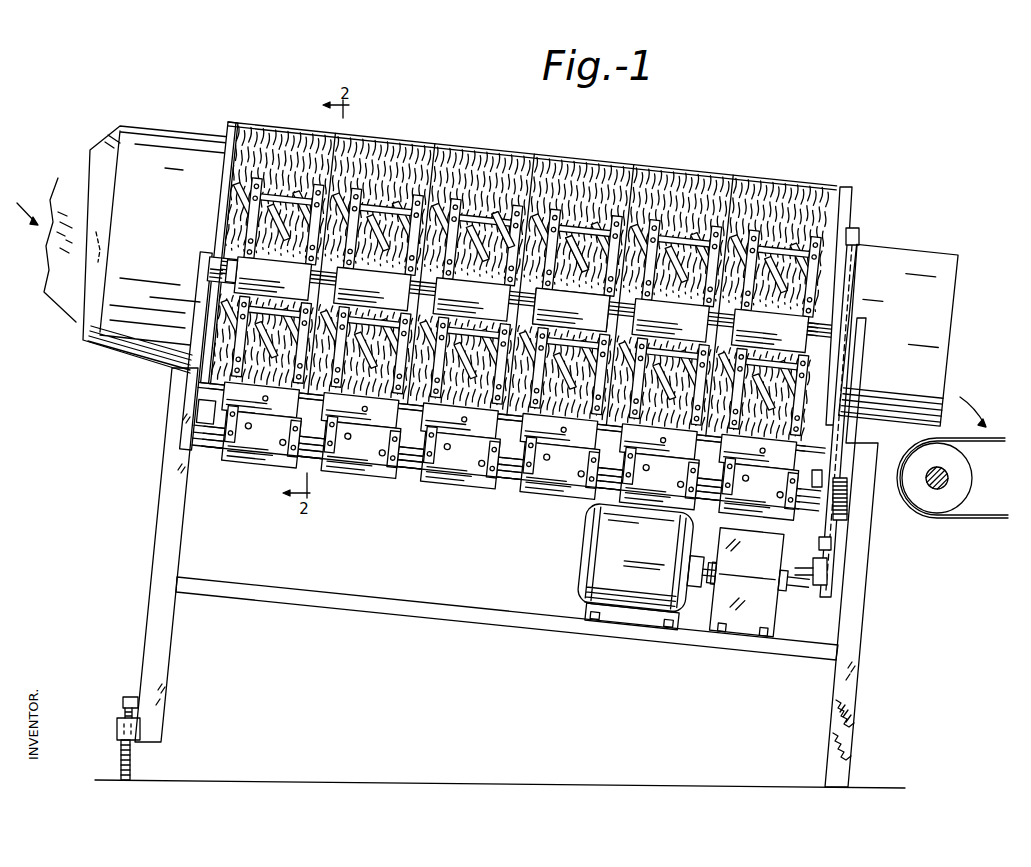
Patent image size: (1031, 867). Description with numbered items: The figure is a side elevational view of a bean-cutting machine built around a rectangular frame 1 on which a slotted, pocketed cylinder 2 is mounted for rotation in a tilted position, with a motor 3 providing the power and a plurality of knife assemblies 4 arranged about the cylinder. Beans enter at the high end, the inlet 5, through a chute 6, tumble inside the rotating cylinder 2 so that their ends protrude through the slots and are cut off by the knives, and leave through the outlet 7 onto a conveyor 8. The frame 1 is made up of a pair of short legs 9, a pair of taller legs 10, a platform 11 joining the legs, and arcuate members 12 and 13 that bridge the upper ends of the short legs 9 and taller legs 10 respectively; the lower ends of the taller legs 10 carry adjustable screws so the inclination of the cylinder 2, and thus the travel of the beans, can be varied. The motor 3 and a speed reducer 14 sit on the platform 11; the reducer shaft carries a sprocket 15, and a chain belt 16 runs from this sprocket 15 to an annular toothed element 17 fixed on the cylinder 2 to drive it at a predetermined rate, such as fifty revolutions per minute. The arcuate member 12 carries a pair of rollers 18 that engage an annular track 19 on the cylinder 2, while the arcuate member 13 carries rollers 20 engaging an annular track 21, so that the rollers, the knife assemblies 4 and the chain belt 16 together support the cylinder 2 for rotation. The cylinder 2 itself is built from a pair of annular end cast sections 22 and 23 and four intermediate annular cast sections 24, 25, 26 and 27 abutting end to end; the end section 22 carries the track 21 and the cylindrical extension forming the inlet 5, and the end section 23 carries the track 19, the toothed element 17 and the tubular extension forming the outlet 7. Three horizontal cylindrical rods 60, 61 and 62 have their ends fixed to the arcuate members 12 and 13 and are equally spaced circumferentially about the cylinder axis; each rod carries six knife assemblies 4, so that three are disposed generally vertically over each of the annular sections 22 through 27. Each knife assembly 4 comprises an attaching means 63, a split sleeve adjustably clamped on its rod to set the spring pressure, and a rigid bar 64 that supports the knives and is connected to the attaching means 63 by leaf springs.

The rectangular frame 1 is at (163, 467).
The cylinder 2 is at (634, 159).
The motor 3 is at (588, 574).
The knife assemblies 4 is at (568, 217).
The inlet 5 is at (186, 131).
The chute 6 is at (98, 245).
The outlet 7 is at (900, 266).
The conveyor 8 is at (975, 438).
The short legs 9 is at (840, 722).
The taller legs 10 is at (162, 528).
The platform 11 is at (411, 606).
The arcuate member 12 is at (862, 362).
The arcuate member 13 is at (200, 290).
The speed reducer 14 is at (770, 616).
The sprocket 15 is at (812, 588).
The chain belt 16 is at (819, 545).
The annular toothed element 17 is at (860, 236).
The rollers 18 is at (815, 489).
The annular track 19 is at (853, 191).
The rollers 20 is at (192, 410).
The annular track 21 is at (232, 127).
The annular end cast section 22 is at (283, 126).
The annular end cast section 23 is at (785, 177).
The intermediate annular cast section 24 is at (392, 140).
The intermediate annular cast section 25 is at (490, 148).
The intermediate annular cast section 26 is at (584, 160).
The intermediate annular cast section 27 is at (688, 168).
The horizontal cylindrical rod 60 is at (210, 264).
The horizontal cylindrical rod 61 is at (200, 385).
The horizontal cylindrical rod 62 is at (207, 448).
The attaching means 63 is at (238, 263).
The rigid bar 64 is at (597, 314).